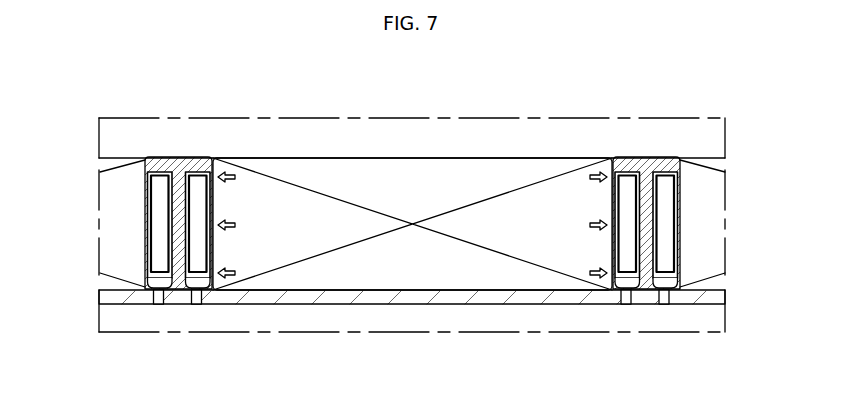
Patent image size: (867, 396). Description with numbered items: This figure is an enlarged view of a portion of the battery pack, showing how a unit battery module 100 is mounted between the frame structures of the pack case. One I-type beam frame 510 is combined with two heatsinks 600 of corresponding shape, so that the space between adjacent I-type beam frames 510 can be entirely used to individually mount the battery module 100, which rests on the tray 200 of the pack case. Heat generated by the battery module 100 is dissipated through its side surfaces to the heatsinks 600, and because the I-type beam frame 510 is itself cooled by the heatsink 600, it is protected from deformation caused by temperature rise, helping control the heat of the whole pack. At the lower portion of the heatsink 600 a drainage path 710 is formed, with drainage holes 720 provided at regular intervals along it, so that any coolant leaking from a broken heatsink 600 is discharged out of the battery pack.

The battery module 100 is at (408, 170).
The tray 200 is at (401, 305).
The I-type beam frame 510 is at (181, 151).
The heatsink 600 is at (143, 248).
The drainage path 710 is at (155, 283).
The drainage holes 720 is at (157, 290).